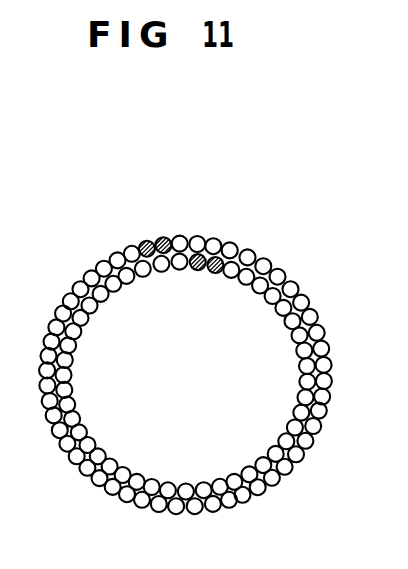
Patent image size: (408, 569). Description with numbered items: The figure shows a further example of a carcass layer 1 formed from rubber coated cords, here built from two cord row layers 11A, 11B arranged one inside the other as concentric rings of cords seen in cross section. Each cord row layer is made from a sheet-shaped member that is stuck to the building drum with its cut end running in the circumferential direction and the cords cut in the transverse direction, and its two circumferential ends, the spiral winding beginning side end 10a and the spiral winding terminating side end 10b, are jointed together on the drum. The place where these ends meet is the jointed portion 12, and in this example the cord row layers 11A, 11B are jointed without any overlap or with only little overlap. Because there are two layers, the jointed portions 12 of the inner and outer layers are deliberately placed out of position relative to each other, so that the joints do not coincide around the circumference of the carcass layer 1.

The carcass layer 1 is at (188, 348).
The spiral winding beginning side end 10a is at (138, 238).
The spiral winding terminating side end 10b is at (168, 237).
The cord row layer 11A is at (81, 393).
The cord row layer 11B is at (62, 464).
The jointed portion 12 is at (151, 264).